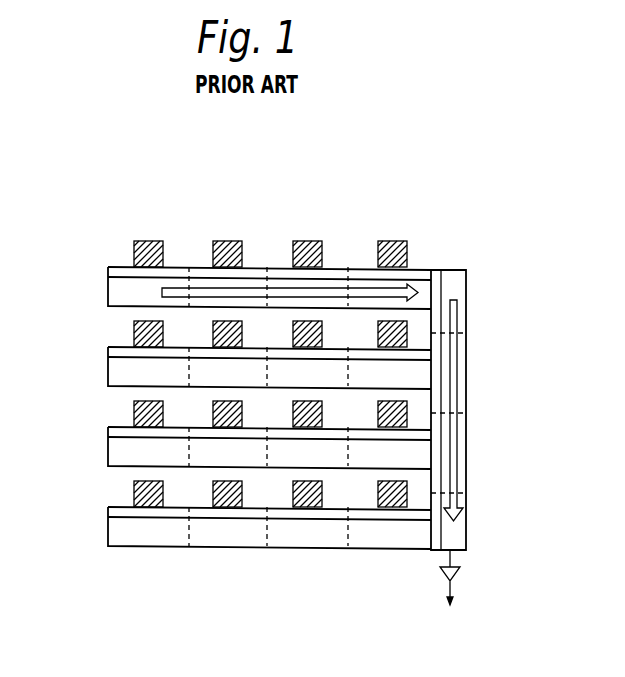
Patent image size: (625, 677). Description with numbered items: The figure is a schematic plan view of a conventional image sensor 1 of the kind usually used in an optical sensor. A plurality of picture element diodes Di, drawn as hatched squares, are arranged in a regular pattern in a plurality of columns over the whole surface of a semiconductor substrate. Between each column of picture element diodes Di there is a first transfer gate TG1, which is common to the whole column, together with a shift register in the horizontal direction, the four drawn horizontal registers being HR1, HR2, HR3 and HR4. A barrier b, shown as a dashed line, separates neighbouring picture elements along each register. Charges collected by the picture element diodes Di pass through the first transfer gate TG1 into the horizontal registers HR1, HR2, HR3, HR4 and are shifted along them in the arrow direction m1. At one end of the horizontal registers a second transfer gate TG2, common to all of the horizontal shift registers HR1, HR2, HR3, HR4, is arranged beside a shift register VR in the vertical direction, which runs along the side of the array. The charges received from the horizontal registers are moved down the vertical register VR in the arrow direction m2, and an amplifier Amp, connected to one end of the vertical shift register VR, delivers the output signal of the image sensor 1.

The picture element diode Di is at (147, 241).
The barrier b is at (196, 267).
The arrow direction m1 is at (259, 288).
The first transfer gate TG1 is at (108, 512).
The shift register in the horizontal direction HR1 is at (108, 294).
The shift register in the horizontal direction HR2 is at (108, 373).
The shift register in the horizontal direction HR3 is at (108, 453).
The shift register in the horizontal direction HR4 is at (108, 534).
The second transfer gate TG2 is at (435, 271).
The shift register in the vertical direction VR is at (466, 271).
The solid state image sensor 1 is at (484, 341).
The arrow direction m2 is at (456, 396).
The amplifier Amp is at (462, 575).